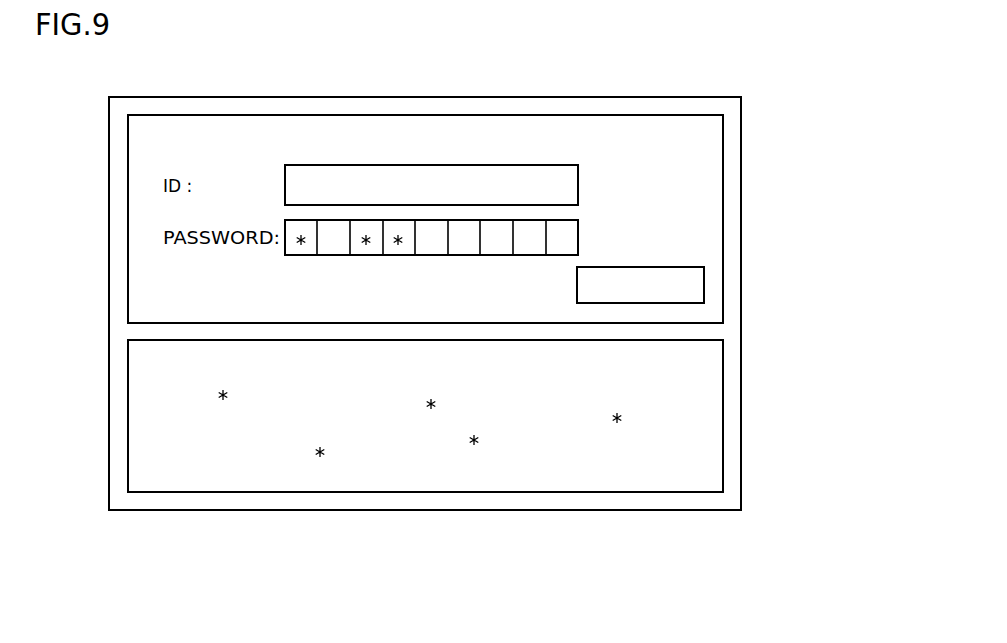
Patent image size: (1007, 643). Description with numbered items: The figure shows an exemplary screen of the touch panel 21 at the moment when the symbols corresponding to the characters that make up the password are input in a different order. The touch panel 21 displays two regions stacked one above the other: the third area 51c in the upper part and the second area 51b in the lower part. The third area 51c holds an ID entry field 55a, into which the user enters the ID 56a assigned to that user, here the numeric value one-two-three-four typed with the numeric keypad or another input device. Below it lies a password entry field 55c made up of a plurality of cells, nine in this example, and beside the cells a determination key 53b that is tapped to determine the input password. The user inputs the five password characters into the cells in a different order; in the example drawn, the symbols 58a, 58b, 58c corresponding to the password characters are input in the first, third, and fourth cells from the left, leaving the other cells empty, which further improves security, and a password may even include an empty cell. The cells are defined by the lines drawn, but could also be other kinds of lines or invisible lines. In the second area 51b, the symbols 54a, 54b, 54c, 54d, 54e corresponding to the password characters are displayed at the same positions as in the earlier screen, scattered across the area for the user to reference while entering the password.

The touch panel 21 is at (705, 97).
The third area 51c is at (655, 115).
The second area 51b is at (150, 492).
The ID entry field 55a is at (578, 182).
The ID 56a is at (347, 178).
The password entry field 55c is at (578, 237).
The determination key 53b is at (704, 283).
The symbol 58a is at (292, 252).
The symbol 58b is at (357, 250).
The symbol 58c is at (392, 250).
The symbol 54a is at (425, 417).
The symbol 54b is at (316, 460).
The symbol 54c is at (627, 410).
The symbol 54d is at (220, 407).
The symbol 54e is at (470, 453).